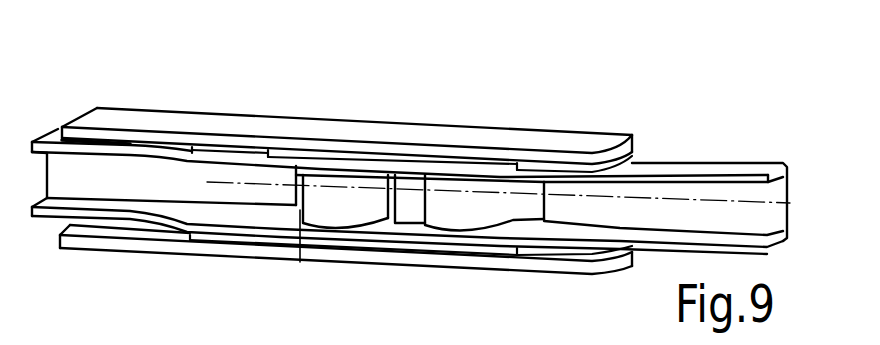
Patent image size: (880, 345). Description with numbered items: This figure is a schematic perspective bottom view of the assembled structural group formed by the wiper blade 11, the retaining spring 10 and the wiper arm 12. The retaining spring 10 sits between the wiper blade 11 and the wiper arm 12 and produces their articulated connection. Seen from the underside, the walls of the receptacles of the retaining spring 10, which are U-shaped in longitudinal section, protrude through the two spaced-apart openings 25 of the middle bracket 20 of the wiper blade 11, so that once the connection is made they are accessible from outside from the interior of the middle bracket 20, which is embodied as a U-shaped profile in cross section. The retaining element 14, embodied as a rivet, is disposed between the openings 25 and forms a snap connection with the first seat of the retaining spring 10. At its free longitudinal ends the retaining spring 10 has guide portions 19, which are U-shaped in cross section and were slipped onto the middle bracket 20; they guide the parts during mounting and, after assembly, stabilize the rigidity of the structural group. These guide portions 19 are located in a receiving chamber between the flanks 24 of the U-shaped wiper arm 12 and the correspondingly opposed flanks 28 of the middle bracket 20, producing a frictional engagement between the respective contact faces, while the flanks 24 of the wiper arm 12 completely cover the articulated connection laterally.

The retaining spring 10 is at (352, 207).
The wiper blade 11 is at (673, 200).
The wiper arm 12 is at (200, 120).
The retaining element 14 is at (405, 205).
The guide portion 19 is at (247, 153).
The middle bracket 20 is at (97, 167).
The flanks 24 is at (148, 135).
The openings 25 is at (300, 210).
The flanks 28 is at (293, 165).